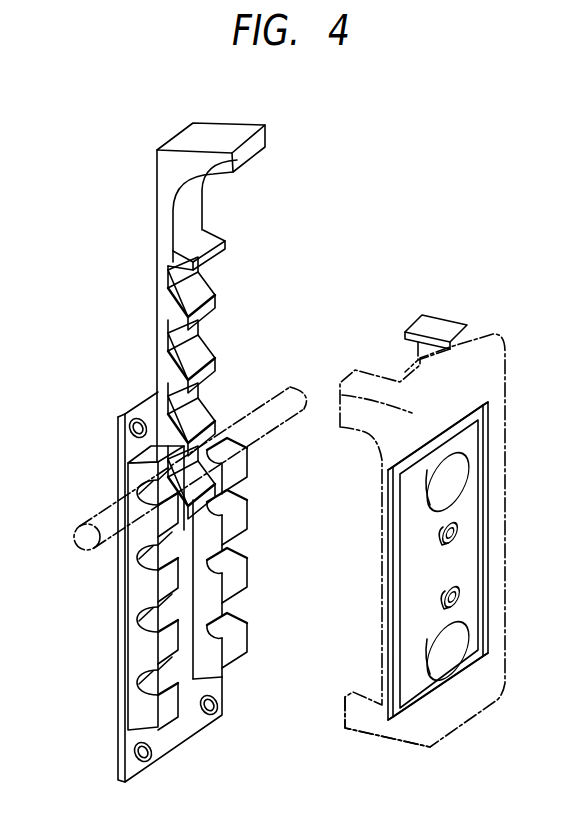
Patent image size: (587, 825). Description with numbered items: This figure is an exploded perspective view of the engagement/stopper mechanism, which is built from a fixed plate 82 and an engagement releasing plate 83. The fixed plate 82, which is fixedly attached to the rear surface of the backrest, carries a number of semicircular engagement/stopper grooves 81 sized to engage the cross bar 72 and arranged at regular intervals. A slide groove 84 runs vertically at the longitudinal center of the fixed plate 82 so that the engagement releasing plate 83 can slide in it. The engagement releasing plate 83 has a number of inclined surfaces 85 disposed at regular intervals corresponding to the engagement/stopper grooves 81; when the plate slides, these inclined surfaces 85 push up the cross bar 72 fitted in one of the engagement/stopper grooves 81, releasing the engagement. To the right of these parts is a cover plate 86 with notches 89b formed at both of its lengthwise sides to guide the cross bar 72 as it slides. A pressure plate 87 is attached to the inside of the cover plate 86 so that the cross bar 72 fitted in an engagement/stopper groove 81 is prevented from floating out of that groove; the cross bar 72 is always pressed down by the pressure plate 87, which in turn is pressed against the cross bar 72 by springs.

The cross bar 72 is at (284, 381).
The engagement/stopper grooves 81 is at (145, 621).
The fixed plate 82 is at (120, 413).
The engagement releasing plate 83 is at (156, 163).
The slide groove 84 is at (188, 686).
The inclined surfaces 85 is at (198, 352).
The cover plate 86 is at (452, 340).
The pressure plate 87 is at (388, 554).
The notches 89b is at (367, 648).